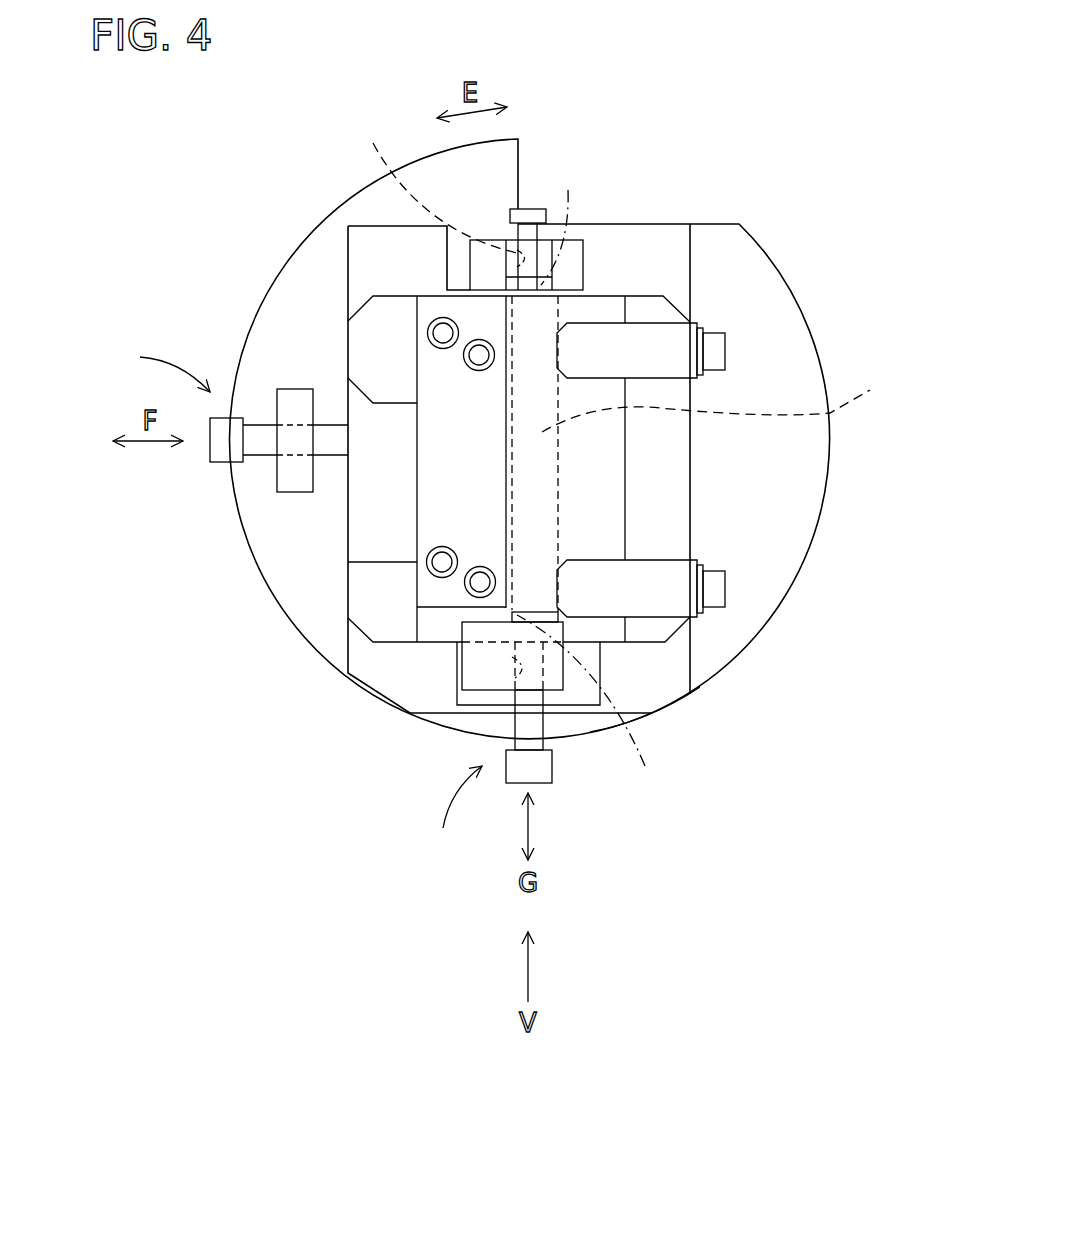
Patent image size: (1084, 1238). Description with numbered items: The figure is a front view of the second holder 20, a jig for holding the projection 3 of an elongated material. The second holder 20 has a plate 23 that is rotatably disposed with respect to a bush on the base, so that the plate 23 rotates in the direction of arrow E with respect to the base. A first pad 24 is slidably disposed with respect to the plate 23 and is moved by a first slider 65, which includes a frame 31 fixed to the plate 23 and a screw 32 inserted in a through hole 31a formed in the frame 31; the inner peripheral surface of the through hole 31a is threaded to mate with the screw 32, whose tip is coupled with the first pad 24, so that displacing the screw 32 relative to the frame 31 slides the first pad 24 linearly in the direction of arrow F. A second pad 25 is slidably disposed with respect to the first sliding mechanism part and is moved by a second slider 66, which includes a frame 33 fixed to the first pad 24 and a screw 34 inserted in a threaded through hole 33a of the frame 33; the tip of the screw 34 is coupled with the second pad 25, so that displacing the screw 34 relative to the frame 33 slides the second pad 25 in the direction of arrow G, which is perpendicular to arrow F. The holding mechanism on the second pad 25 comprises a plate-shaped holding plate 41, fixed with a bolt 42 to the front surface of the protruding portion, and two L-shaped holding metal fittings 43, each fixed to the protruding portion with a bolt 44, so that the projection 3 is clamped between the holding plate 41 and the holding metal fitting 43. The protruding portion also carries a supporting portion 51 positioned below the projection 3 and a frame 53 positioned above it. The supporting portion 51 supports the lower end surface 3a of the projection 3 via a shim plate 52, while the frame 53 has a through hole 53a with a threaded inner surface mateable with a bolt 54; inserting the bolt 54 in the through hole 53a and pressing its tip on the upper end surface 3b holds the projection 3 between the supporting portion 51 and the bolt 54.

The projection 3 is at (717, 403).
The lower end surface 3a is at (591, 705).
The upper end surface 3b is at (563, 222).
The second holder 20 is at (772, 163).
The plate 23 is at (298, 250).
The first pad 24 is at (365, 510).
The second pad 25 is at (667, 472).
The frame 31 is at (293, 400).
The through hole 31a is at (280, 440).
The screw 32 is at (217, 443).
The frame 33 is at (592, 667).
The through hole 33a is at (462, 660).
The screw 34 is at (542, 765).
The holding plate 41 is at (425, 512).
The bolt 42 is at (442, 562).
The holding metal fitting 43 is at (660, 335).
The bolt 44 is at (717, 348).
The supporting portion 51 is at (473, 655).
The shim plate 52 is at (557, 612).
The frame 53 is at (578, 257).
The through hole 53a is at (432, 190).
The bolt 54 is at (531, 208).
The first slider 65 is at (156, 362).
The second slider 66 is at (443, 814).